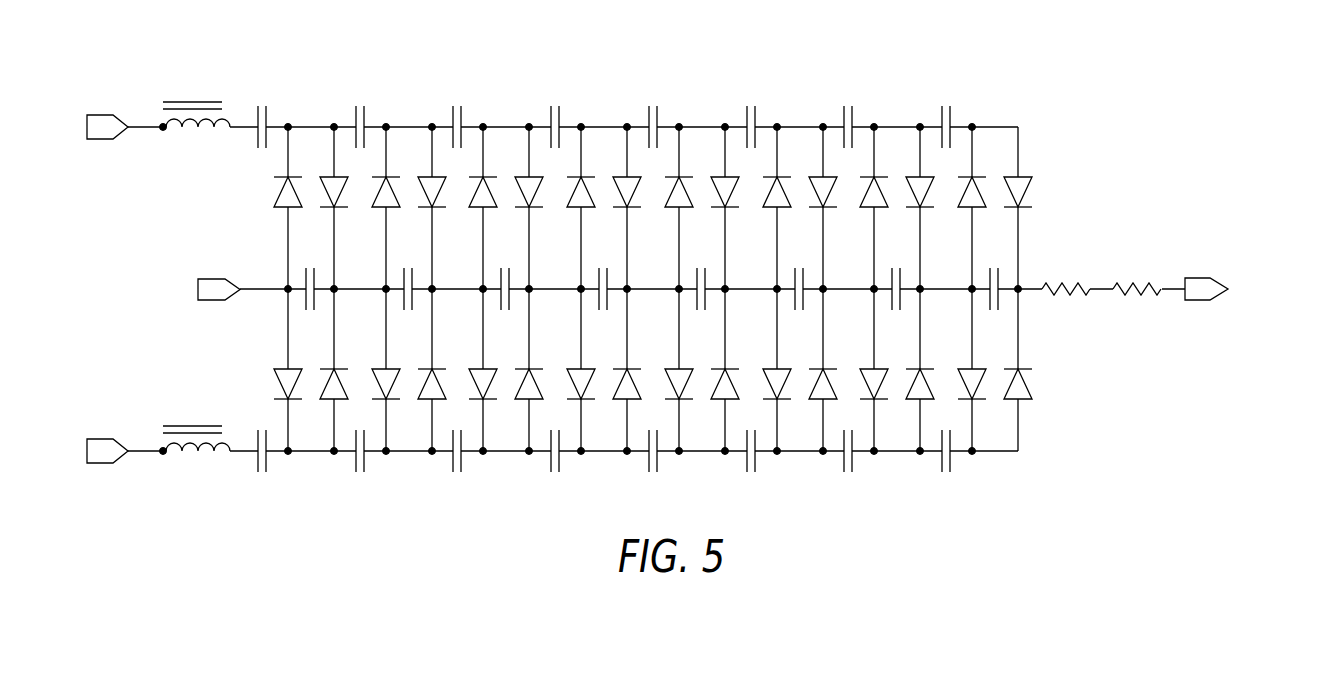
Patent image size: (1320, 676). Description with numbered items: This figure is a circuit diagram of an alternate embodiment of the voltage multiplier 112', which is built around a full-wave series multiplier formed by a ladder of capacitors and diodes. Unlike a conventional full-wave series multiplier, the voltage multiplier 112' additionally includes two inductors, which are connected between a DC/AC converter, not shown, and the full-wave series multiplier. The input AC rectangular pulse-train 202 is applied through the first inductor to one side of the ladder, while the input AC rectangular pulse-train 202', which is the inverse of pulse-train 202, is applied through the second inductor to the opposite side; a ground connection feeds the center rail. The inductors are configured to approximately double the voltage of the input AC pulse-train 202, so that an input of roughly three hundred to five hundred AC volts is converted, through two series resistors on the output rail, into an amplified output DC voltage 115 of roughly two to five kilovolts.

The voltage multiplier 112' is at (669, 244).
The input AC rectangular pulse-train 202 is at (121, 143).
The input AC rectangular pulse-train 202' is at (123, 466).
The amplified output DC voltage 115 is at (1198, 302).